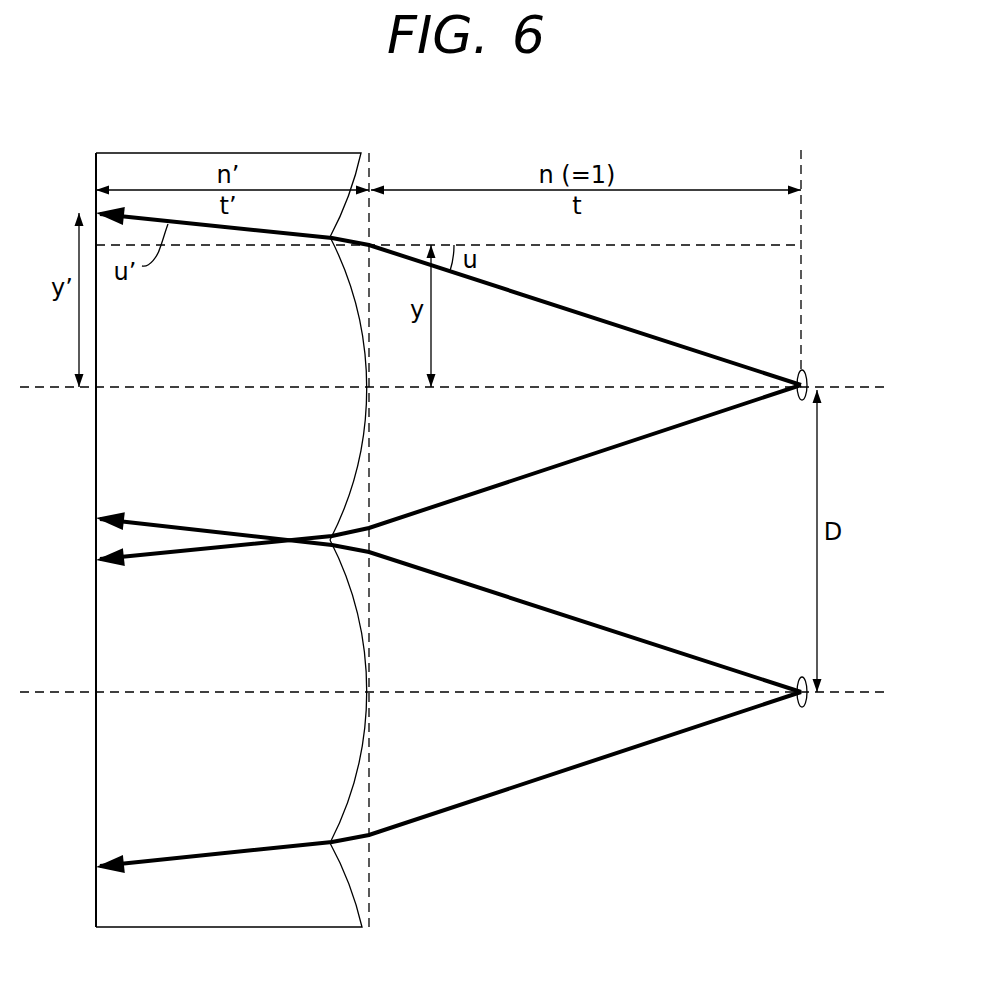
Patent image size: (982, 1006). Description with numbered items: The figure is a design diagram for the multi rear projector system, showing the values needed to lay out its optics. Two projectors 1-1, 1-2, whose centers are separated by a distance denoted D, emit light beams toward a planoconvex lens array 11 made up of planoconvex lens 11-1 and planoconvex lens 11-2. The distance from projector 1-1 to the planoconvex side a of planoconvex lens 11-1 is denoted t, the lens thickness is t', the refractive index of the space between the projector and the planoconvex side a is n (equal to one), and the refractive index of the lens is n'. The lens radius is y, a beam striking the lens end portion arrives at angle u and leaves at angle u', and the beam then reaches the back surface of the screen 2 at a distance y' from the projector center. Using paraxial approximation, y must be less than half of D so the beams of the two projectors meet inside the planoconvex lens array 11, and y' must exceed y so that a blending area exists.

The screen 2 is at (96, 152).
The planoconvex lens array 11 is at (305, 905).
The planoconvex lens 11-1 is at (140, 452).
The planoconvex lens 11-2 is at (142, 759).
The projector 1-1 is at (808, 376).
The projector 1-2 is at (804, 708).
The planoconvex side a is at (370, 527).